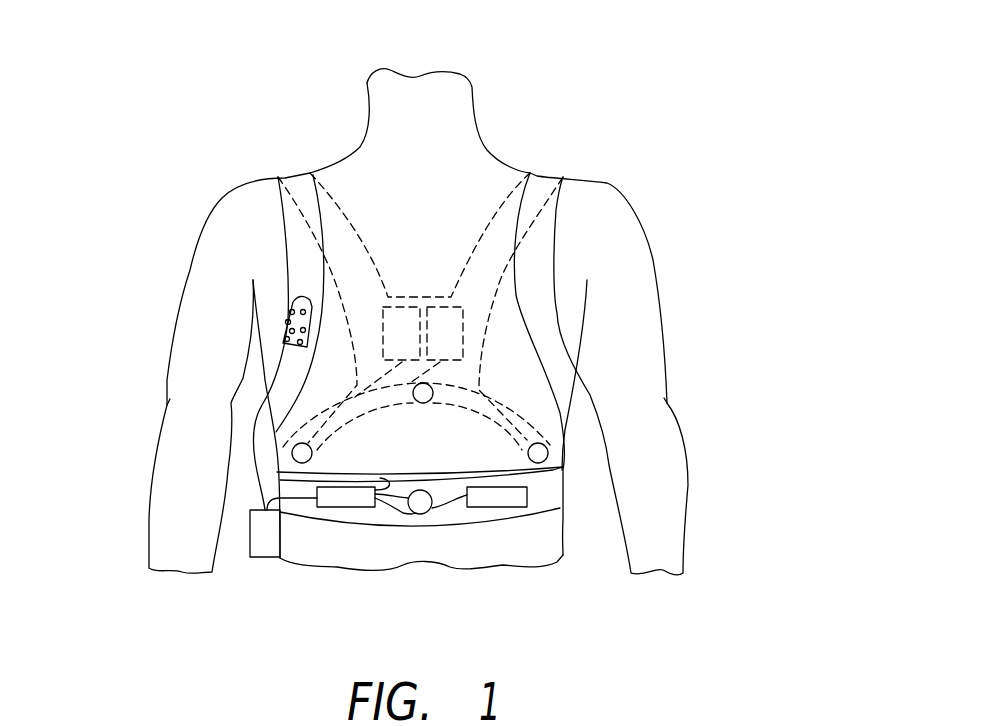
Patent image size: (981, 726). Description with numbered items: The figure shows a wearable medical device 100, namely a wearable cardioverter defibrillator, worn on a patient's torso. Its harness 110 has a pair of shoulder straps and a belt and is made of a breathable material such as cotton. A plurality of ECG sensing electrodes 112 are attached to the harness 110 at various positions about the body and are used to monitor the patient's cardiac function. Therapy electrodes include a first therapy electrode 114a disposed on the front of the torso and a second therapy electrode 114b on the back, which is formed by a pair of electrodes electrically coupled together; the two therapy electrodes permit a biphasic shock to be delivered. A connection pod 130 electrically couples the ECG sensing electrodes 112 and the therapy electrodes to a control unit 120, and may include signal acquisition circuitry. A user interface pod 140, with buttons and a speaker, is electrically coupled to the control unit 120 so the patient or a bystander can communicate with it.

The wearable medical device 100 is at (215, 72).
The harness 110 is at (532, 174).
The ECG sensing electrodes 112 is at (295, 447).
The first therapy electrode 114a is at (490, 507).
The second therapy electrode 114b is at (383, 317).
The control unit 120 is at (250, 522).
The connection pod 130 is at (337, 507).
The user interface pod 140 is at (283, 320).